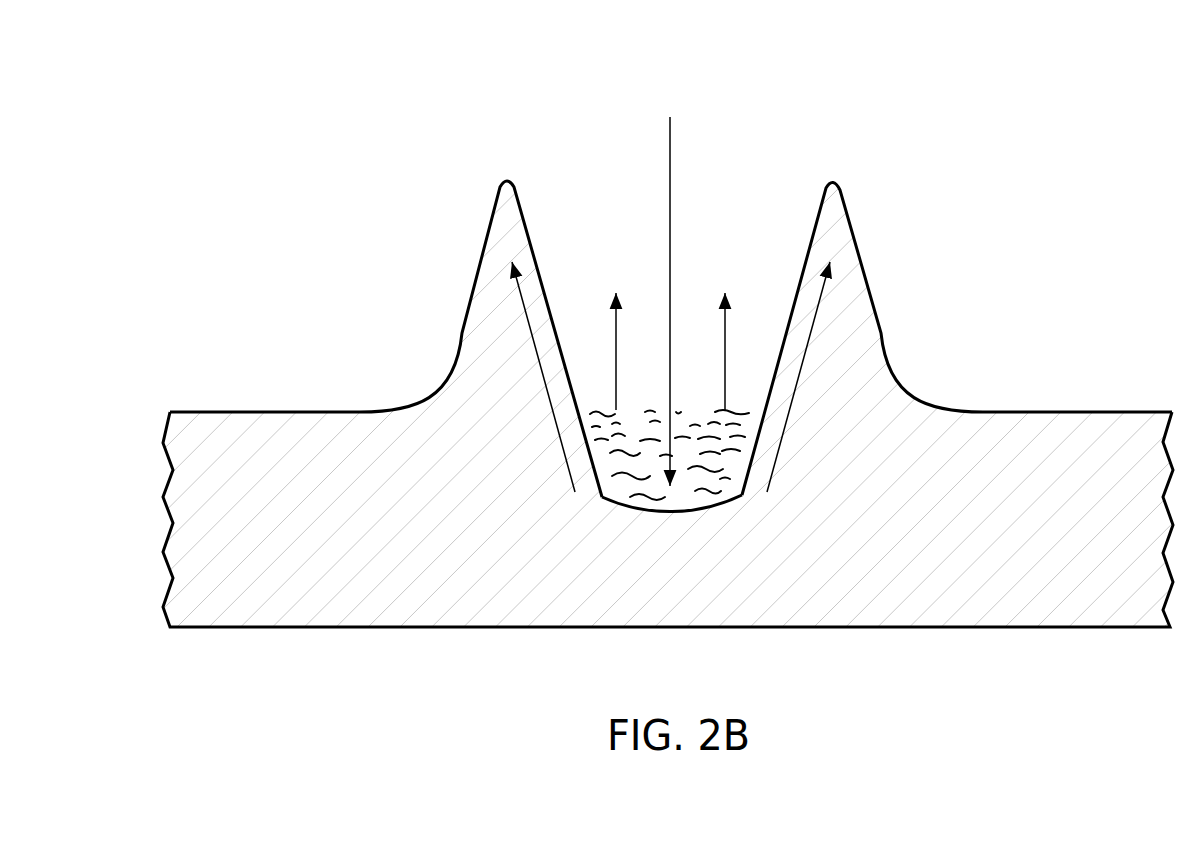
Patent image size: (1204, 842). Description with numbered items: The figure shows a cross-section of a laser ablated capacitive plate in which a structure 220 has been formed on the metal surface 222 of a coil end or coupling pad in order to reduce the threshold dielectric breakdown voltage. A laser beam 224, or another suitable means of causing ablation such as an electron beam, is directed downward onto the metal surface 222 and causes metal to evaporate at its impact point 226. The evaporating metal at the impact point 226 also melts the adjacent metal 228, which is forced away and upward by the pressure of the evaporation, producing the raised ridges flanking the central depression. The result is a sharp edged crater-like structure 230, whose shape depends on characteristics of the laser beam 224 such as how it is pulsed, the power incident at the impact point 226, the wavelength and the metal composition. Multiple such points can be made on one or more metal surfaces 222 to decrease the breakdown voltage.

The structure 220 is at (602, 346).
The metal surface 222 is at (671, 358).
The laser beam 224 is at (670, 145).
The impact point 226 is at (624, 487).
The adjacent metal 228 is at (862, 338).
The sharp edged crater-like structure 230 is at (481, 281).